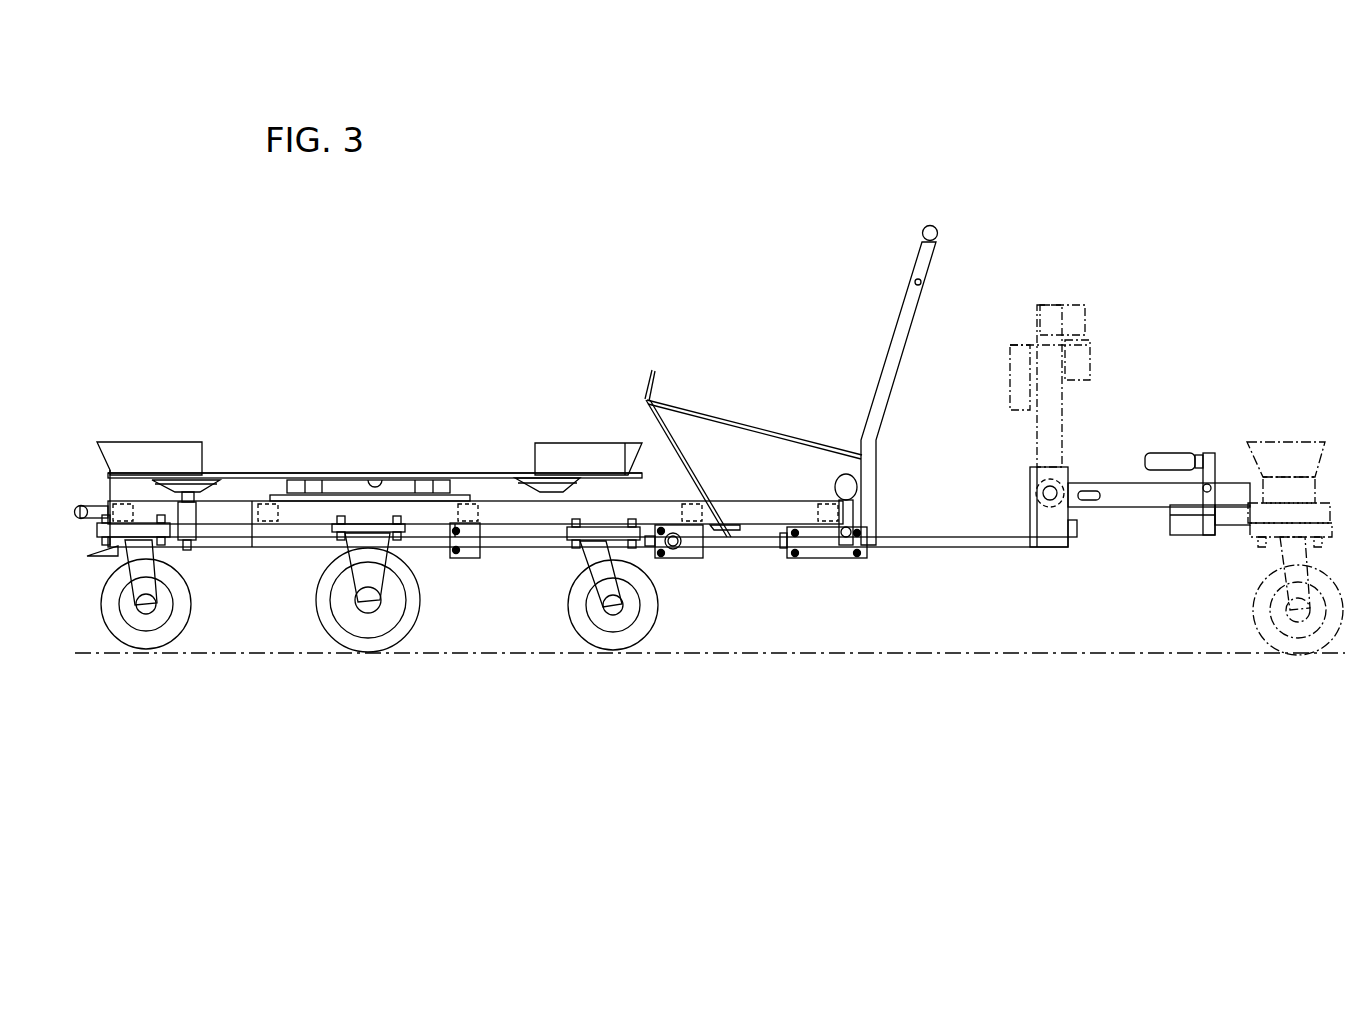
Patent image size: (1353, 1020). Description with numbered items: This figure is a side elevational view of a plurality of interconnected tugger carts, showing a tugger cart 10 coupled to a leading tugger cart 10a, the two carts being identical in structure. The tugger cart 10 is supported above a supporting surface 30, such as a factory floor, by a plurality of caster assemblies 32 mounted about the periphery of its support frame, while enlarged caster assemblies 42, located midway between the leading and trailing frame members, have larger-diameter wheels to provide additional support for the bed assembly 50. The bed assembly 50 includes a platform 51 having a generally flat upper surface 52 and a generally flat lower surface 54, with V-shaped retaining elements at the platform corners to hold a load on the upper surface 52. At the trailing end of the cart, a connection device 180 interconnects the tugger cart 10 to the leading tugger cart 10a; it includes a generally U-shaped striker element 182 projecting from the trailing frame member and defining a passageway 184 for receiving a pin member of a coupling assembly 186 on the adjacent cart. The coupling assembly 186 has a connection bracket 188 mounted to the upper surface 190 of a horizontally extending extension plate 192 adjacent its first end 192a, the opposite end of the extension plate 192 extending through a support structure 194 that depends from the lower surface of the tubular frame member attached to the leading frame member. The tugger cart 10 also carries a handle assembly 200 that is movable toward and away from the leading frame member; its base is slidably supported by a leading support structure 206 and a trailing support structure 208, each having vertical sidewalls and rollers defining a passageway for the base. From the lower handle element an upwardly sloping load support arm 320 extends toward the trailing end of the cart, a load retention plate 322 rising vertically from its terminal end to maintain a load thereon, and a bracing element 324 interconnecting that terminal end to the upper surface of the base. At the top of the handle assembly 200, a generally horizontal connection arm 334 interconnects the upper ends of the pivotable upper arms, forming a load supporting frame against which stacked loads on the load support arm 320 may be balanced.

The tugger cart 10 is at (157, 435).
The leading tugger cart 10a is at (1278, 438).
The supporting surface 30 is at (712, 653).
The caster assemblies 32 is at (103, 632).
The enlarged caster assemblies 42 is at (320, 632).
The bed assembly 50 is at (375, 441).
The platform 51 is at (243, 472).
The upper surface 52 is at (405, 477).
The lower surface 54 is at (376, 478).
The connection device 180 is at (1117, 510).
The striker element 182 is at (76, 505).
The passageway 184 is at (1240, 535).
The coupling assembly 186 is at (1116, 480).
The connection bracket 188 is at (1028, 500).
The upper surface of extension plate 190 is at (592, 397).
The extension plate 192 is at (908, 546).
The first end of extension plate 192a is at (1048, 552).
The support structure 194 is at (828, 562).
The handle assembly 200 is at (863, 357).
The leading support structure 206 is at (682, 562).
The trailing support structure 208 is at (467, 560).
The load support arm 320 is at (706, 412).
The load retention plate 322 is at (647, 393).
The bracing element 324 is at (690, 462).
The connection arm 334 is at (925, 232).